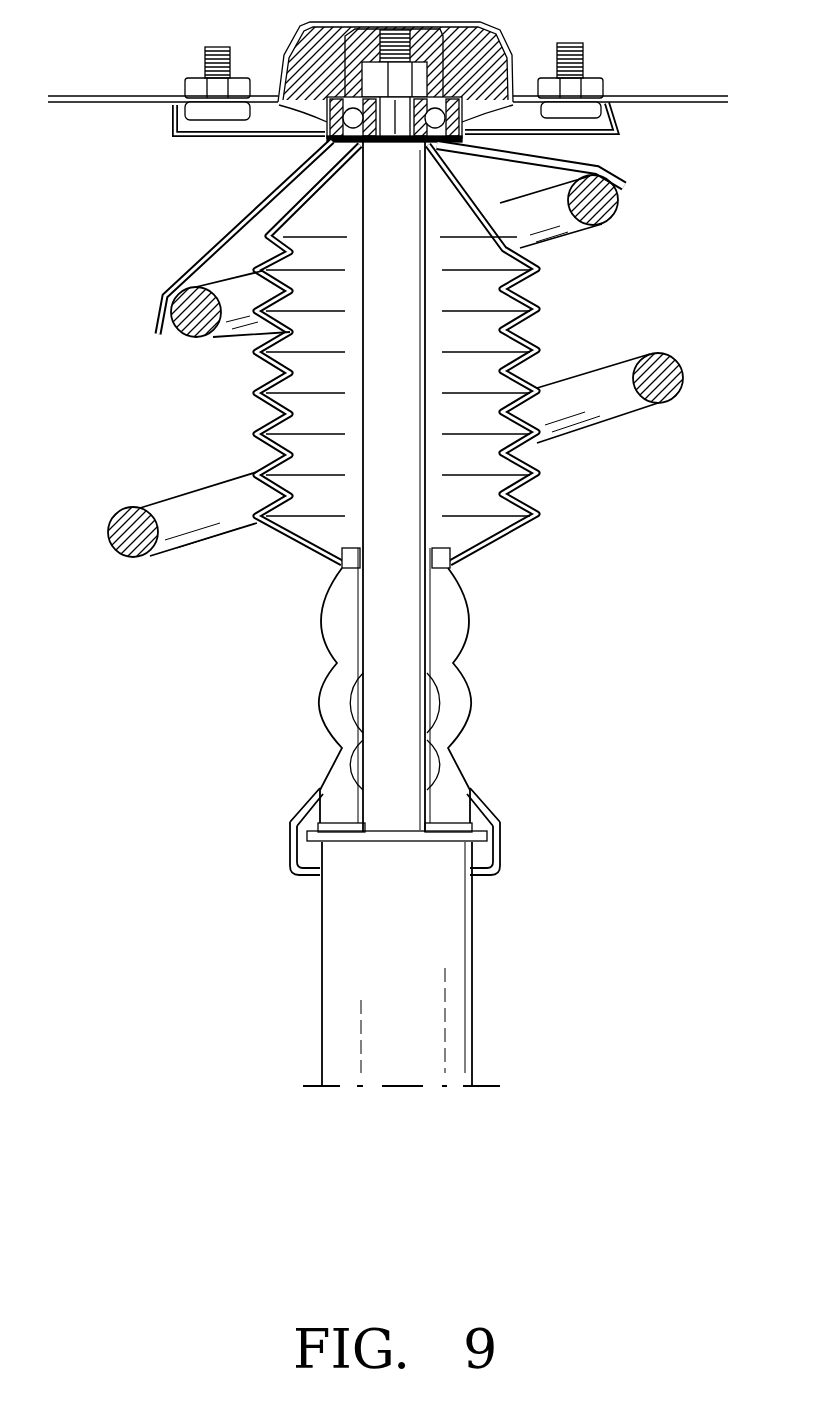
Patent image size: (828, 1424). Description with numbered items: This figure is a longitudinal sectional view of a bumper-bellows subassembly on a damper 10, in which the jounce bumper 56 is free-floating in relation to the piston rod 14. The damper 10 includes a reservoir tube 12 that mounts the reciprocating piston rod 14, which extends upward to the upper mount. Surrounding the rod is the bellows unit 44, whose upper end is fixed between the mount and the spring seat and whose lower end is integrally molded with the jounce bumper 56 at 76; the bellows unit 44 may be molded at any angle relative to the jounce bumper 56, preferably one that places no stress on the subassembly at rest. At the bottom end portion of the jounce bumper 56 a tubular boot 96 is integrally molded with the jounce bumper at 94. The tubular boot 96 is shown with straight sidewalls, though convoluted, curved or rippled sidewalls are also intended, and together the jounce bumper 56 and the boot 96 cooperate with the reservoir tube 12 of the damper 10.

The damper 10 is at (388, 607).
The reservoir tube 12 is at (426, 1030).
The piston rod 14 is at (402, 656).
The bellows unit 44 is at (546, 270).
The jounce bumper 56 is at (448, 703).
The molded junction of bellows and jounce bumper 76 is at (456, 573).
The molded junction of boot and jounce bumper 94 is at (492, 788).
The tubular boot 96 is at (509, 852).